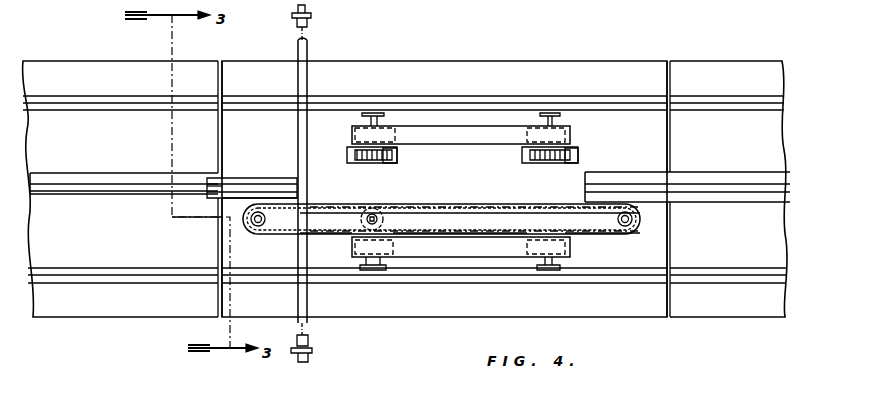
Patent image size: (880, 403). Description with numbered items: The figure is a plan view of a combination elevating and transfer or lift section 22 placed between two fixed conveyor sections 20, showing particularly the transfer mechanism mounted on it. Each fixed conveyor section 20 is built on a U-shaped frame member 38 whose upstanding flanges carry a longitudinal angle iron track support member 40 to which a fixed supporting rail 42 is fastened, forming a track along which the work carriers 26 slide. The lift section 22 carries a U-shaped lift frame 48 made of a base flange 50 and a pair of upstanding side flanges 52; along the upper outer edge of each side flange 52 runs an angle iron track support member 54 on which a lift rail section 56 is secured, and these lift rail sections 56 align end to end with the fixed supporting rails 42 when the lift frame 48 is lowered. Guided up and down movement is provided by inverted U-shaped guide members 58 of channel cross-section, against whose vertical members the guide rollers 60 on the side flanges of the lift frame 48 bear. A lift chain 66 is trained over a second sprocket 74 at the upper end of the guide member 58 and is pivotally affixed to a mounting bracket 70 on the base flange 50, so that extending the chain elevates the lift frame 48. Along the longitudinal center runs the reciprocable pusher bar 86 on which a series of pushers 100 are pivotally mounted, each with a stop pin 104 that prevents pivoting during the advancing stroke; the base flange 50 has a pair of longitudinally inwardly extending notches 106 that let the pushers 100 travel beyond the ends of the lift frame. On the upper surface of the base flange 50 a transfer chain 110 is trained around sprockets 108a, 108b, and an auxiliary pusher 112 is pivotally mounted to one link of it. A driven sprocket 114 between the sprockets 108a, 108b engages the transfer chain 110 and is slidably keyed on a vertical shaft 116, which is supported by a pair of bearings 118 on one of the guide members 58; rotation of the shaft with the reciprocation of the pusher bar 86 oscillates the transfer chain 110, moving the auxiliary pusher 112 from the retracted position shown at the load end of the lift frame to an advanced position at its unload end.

The fixed conveyor section 20 is at (68, 318).
The lift section 22 is at (458, 316).
The work carrier 26 is at (310, 50).
The U-shaped frame member 38 is at (78, 110).
The track support member 40 is at (90, 100).
The fixed supporting rail 42 is at (80, 72).
The lift frame 48 is at (583, 66).
The base flange 50 is at (470, 190).
The side flange 52 is at (240, 107).
The track support member 54 is at (563, 278).
The lift rail section 56 is at (450, 68).
The guide member 58 is at (450, 135).
The guide roller 60 is at (520, 125).
The lift chain 66 is at (360, 152).
The mounting bracket 70 is at (400, 158).
The second sprocket 74 is at (375, 163).
The pusher bar 86 is at (78, 200).
The pusher 100 is at (222, 200).
The stop pin 104 is at (207, 192).
The notch 106 is at (240, 183).
The sprocket 108a is at (250, 226).
The sprocket 108b is at (635, 226).
The transfer chain 110 is at (528, 208).
The auxiliary pusher 112 is at (300, 196).
The driven sprocket 114 is at (385, 219).
The vertical shaft 116 is at (378, 214).
The bearing 118 is at (362, 231).